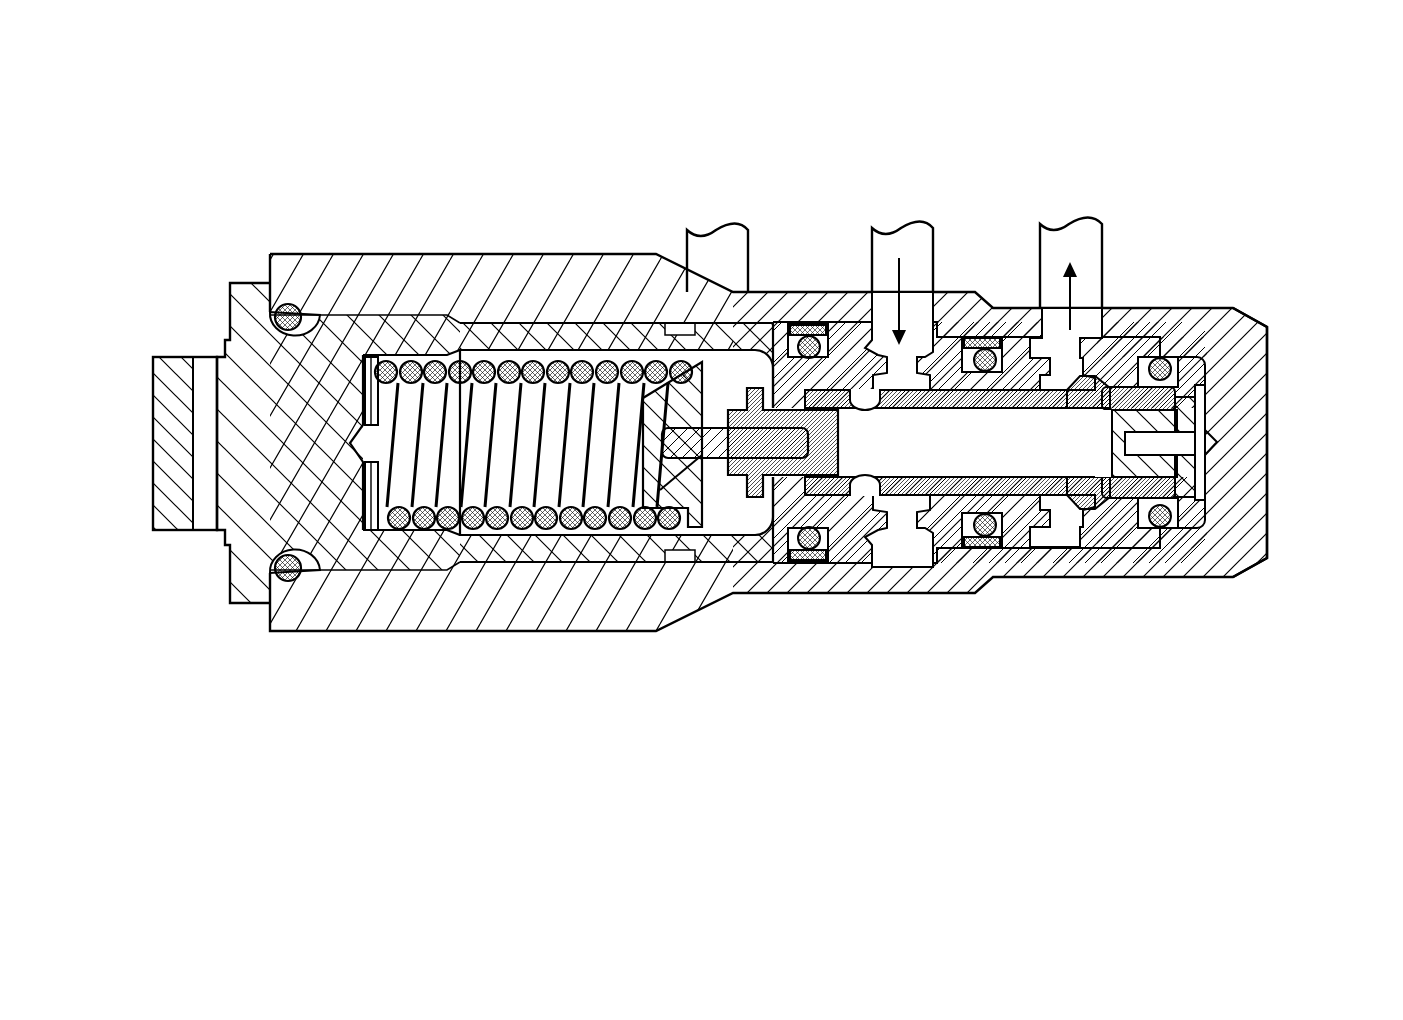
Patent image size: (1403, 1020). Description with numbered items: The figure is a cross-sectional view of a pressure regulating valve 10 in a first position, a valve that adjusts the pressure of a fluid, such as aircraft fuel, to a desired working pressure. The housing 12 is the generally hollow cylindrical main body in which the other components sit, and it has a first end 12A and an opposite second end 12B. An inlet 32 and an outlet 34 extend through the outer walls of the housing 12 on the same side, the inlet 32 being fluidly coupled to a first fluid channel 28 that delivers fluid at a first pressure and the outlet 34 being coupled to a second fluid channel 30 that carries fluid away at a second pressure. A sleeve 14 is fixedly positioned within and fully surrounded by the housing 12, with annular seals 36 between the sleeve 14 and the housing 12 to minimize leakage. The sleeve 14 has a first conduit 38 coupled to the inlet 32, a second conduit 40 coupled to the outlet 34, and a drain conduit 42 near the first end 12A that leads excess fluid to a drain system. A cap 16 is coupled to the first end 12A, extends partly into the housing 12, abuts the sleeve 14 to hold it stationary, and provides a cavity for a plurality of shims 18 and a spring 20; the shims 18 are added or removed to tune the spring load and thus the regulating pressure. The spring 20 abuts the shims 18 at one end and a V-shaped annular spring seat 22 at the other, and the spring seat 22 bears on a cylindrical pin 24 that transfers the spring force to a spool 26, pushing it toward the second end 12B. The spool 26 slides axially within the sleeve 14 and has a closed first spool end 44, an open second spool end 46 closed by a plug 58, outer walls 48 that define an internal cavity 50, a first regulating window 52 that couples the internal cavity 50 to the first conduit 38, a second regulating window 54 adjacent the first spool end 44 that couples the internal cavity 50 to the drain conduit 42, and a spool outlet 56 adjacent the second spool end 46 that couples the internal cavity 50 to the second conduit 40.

The pressure regulating valve 10 is at (750, 434).
The housing 12 is at (528, 602).
The first end 12A is at (258, 265).
The second end 12B is at (1274, 538).
The sleeve 14 is at (857, 520).
The cap 16 is at (175, 505).
The shims 18 is at (362, 527).
The spring 20 is at (448, 522).
The spring seat 22 is at (657, 480).
The pin 24 is at (778, 445).
The spool 26 is at (1046, 505).
The first fluid channel 28 is at (905, 245).
The second fluid channel 30 is at (1066, 250).
The inlet 32 is at (866, 405).
The outlet 34 is at (1065, 367).
The seals 36 is at (805, 548).
The first conduit 38 is at (905, 360).
The second conduit 40 is at (1096, 390).
The drain conduit 42 is at (750, 360).
The first spool end 44 is at (746, 488).
The second spool end 46 is at (1178, 482).
The outer walls 48 is at (1023, 492).
The internal cavity 50 is at (1075, 445).
The first regulating window 52 is at (860, 398).
The second regulating window 54 is at (637, 328).
The spool outlet 56 is at (1100, 362).
The plug 58 is at (1182, 404).